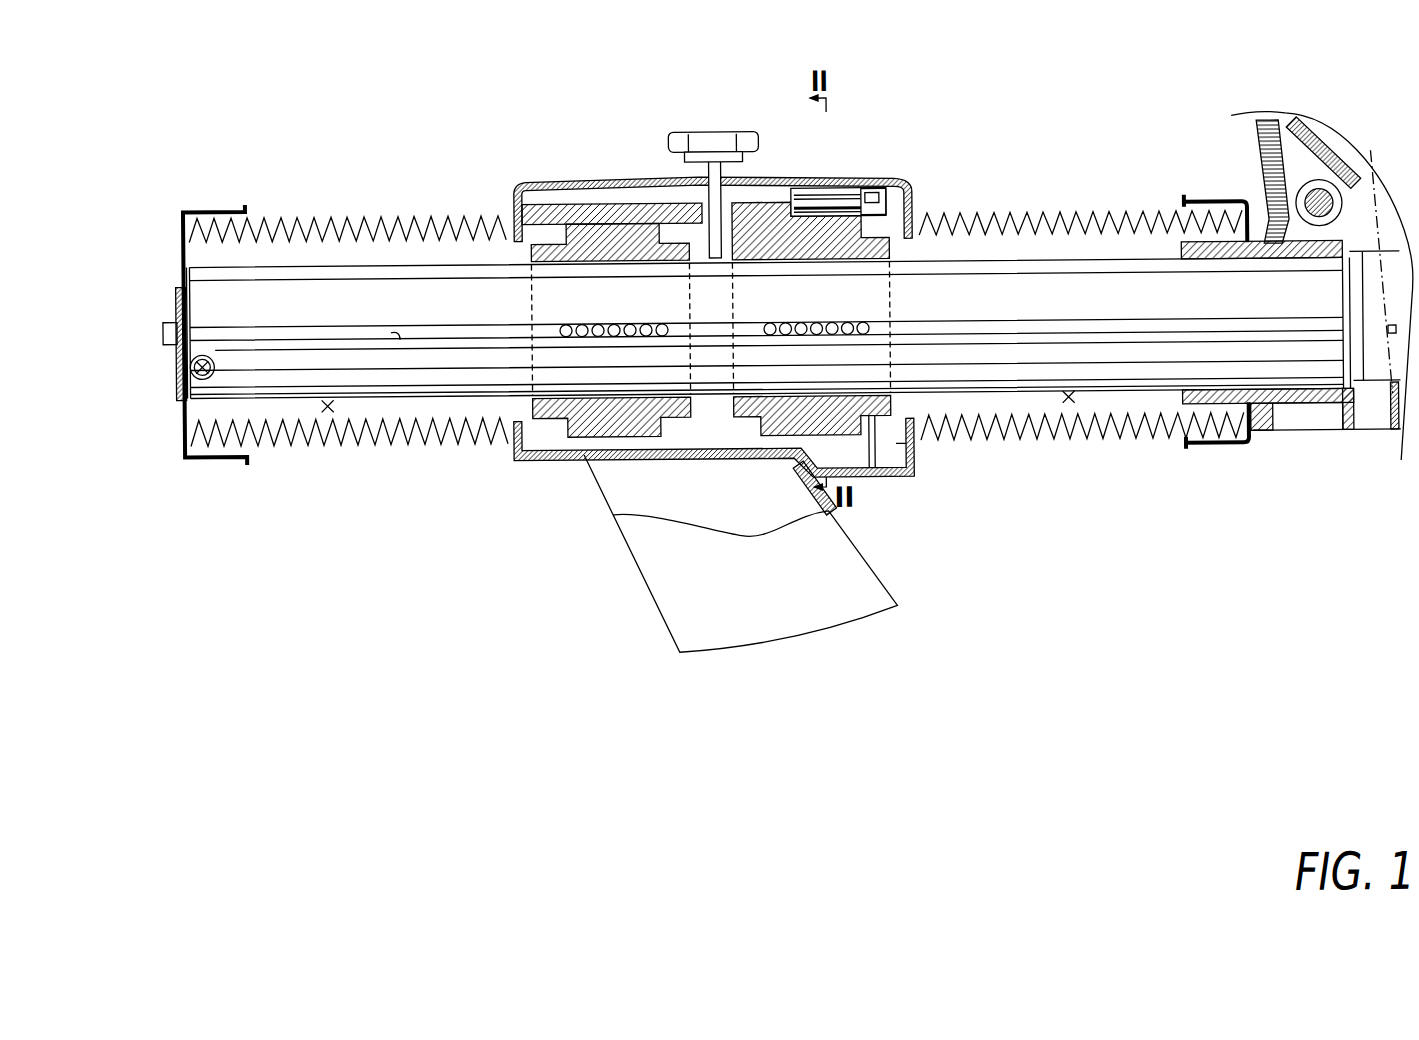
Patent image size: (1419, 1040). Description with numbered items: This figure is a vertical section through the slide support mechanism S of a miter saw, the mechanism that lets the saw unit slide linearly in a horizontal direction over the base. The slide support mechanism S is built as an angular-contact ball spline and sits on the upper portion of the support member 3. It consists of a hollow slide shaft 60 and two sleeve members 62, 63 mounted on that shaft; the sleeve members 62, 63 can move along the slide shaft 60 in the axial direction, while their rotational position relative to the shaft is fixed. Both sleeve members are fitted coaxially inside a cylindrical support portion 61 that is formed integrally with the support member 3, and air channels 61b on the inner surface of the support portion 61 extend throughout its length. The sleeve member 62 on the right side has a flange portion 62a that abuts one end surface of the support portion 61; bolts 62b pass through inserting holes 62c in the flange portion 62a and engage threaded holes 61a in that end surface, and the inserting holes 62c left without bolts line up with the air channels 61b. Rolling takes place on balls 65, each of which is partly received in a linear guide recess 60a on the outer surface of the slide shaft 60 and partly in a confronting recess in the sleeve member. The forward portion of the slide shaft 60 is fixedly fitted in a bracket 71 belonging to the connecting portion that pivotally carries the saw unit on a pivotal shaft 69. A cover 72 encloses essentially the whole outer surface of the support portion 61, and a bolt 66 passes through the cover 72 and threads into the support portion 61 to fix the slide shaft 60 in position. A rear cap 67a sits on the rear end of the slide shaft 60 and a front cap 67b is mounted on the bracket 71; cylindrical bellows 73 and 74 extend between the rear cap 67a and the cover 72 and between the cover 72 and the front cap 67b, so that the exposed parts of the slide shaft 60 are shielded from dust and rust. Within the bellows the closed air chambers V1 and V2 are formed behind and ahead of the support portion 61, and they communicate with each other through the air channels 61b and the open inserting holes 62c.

The support member 3 is at (672, 591).
The slide shaft 60 is at (768, 332).
The linear guide recesses 60a is at (400, 341).
The cylindrical support portion 61 is at (713, 350).
The threaded holes 61a is at (822, 194).
The air channels 61b is at (755, 449).
The sleeve member 62 is at (893, 304).
The flange portion 62a is at (847, 197).
The bolts 62b is at (887, 200).
The inserting holes 62c is at (833, 226).
The sleeve member 63 is at (600, 262).
The balls 65 is at (780, 341).
The bolt 66 is at (707, 136).
The rear cap 67a is at (218, 212).
The front cap 67b is at (1195, 453).
The pivotal shaft 69 is at (1298, 207).
The bracket 71 is at (1290, 412).
The cover 72 is at (630, 187).
The bellows 73 is at (358, 218).
The bellows 74 is at (1114, 221).
The slide support mechanism S is at (553, 170).
The air chamber V1 is at (1068, 406).
The air chamber V2 is at (328, 408).